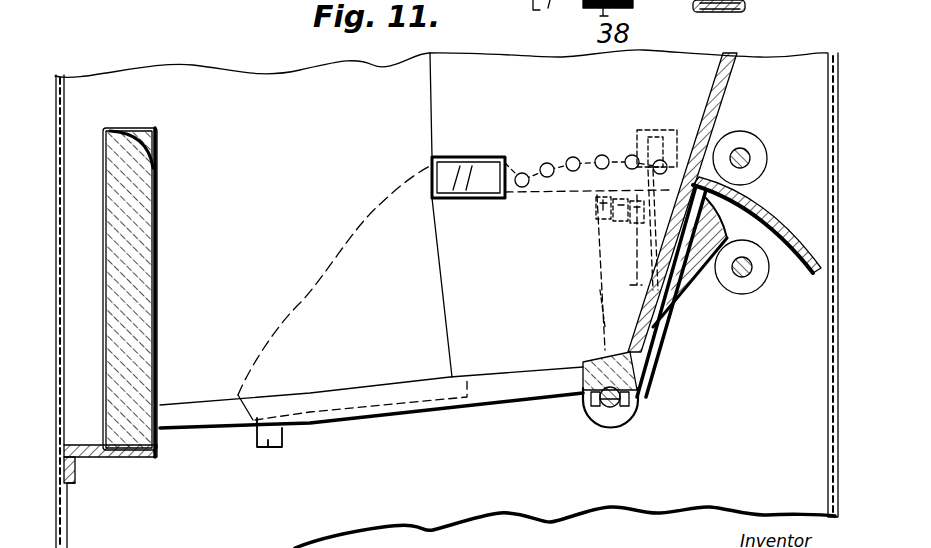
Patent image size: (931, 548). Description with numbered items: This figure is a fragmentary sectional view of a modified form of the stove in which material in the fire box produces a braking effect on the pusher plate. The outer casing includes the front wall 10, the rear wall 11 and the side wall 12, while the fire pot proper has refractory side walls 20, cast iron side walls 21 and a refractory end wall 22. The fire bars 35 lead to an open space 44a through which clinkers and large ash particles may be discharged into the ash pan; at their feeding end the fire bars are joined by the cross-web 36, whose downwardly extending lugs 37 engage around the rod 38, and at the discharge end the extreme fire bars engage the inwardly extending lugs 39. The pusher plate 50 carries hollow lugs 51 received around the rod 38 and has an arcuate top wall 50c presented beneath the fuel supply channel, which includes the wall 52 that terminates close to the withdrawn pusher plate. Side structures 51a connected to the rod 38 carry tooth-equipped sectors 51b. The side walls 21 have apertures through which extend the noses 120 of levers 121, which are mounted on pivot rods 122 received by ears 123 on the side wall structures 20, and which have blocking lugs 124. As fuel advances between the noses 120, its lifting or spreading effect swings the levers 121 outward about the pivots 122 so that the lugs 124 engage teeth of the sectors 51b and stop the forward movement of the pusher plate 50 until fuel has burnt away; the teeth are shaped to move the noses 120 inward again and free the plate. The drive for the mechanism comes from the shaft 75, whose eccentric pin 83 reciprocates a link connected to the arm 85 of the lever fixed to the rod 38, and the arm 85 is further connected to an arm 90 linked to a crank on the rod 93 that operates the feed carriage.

The front wall 10 is at (64, 100).
The rear wall 11 is at (828, 422).
The side wall 12 is at (131, 10).
The refractory side wall 20 is at (462, 215).
The cast iron side wall 21 is at (335, 292).
The refractory end wall 22 is at (152, 200).
The fire bars 35 is at (331, 400).
The cross-web 36 is at (597, 360).
The lugs 37 is at (640, 398).
The rod 38 is at (597, 411).
The lugs 39 is at (270, 452).
The open space 44a is at (212, 385).
The pusher plate 50 is at (633, 320).
The arcuate top wall 50c is at (790, 214).
The hollow lugs 51 is at (622, 421).
The side structures 51a is at (605, 298).
The tooth-equipped sectors 51b is at (700, 258).
The wall 52 is at (730, 80).
The shaft 75 is at (758, 278).
The eccentric pin 83 is at (727, 12).
The arm 85 is at (628, 13).
The arm 90 is at (556, 19).
The rod 93 is at (748, 150).
The nose 120 is at (478, 175).
The lever 121 is at (547, 150).
The pivot rod 122 is at (663, 128).
The ears 123 is at (637, 150).
The blocking lug 124 is at (596, 210).